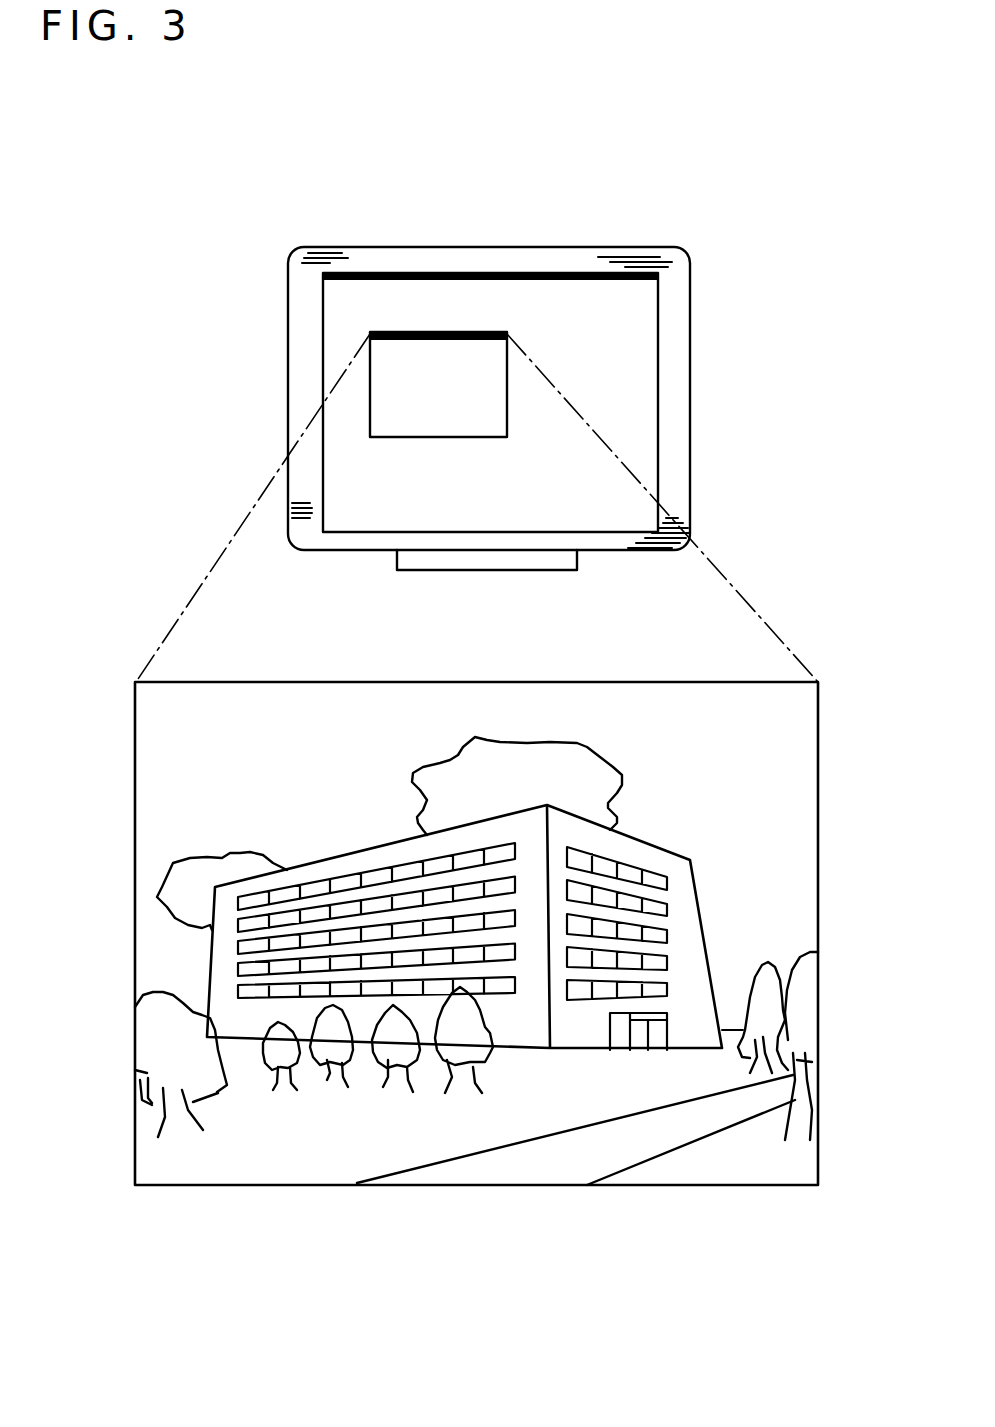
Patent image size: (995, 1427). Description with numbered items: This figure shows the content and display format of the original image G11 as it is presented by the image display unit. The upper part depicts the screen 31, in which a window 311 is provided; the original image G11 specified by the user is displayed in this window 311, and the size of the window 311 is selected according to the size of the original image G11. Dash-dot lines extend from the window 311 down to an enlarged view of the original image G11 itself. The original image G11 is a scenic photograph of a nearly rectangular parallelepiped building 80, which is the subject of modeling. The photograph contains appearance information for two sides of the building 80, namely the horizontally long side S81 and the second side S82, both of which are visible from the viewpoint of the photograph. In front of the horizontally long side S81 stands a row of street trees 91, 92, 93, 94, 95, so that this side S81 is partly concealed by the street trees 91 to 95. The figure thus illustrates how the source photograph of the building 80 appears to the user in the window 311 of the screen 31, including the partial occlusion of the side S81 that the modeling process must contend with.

The screen 31 is at (658, 375).
The window 311 is at (431, 332).
The original image G11 is at (488, 680).
The building 80 is at (367, 860).
The street tree 91 is at (450, 1090).
The street tree 92 is at (393, 1087).
The street tree 93 is at (332, 1082).
The street tree 94 is at (270, 1087).
The street tree 95 is at (150, 1080).
The horizontally long side S81 is at (512, 1033).
The side S82 is at (705, 1030).